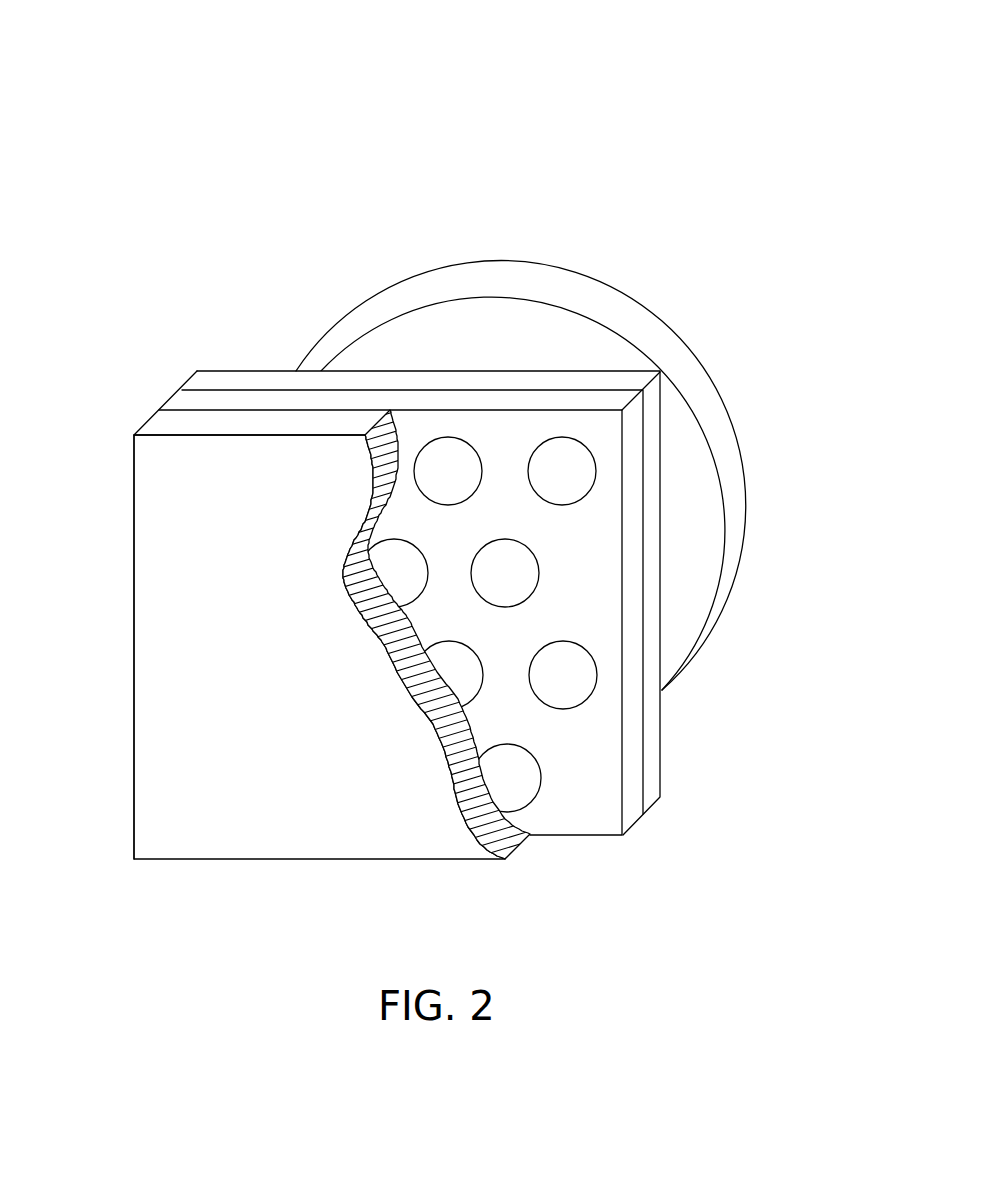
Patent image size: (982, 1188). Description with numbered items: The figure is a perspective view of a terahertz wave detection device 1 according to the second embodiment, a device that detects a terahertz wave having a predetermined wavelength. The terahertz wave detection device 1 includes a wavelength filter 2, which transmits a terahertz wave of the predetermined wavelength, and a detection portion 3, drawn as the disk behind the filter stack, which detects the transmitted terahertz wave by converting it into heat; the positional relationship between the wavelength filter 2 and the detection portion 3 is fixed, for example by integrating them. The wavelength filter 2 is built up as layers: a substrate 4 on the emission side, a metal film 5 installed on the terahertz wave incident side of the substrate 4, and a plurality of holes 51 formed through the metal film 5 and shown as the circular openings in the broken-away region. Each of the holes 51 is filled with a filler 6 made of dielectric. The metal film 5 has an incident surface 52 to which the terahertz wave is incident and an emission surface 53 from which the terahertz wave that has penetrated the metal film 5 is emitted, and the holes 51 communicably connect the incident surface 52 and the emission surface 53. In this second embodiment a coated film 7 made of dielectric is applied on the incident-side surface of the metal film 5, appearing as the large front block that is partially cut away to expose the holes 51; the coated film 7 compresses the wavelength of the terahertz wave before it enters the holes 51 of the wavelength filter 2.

The terahertz wave detection device 1 is at (646, 125).
The wavelength filter 2 is at (128, 563).
The detection portion 3 is at (718, 595).
The substrate 4 is at (653, 752).
The metal film 5 is at (562, 805).
The filler 6 is at (447, 460).
The coated film 7 is at (192, 743).
The holes 51 is at (535, 552).
The incident surface 52 is at (594, 812).
The emission surface 53 is at (647, 787).